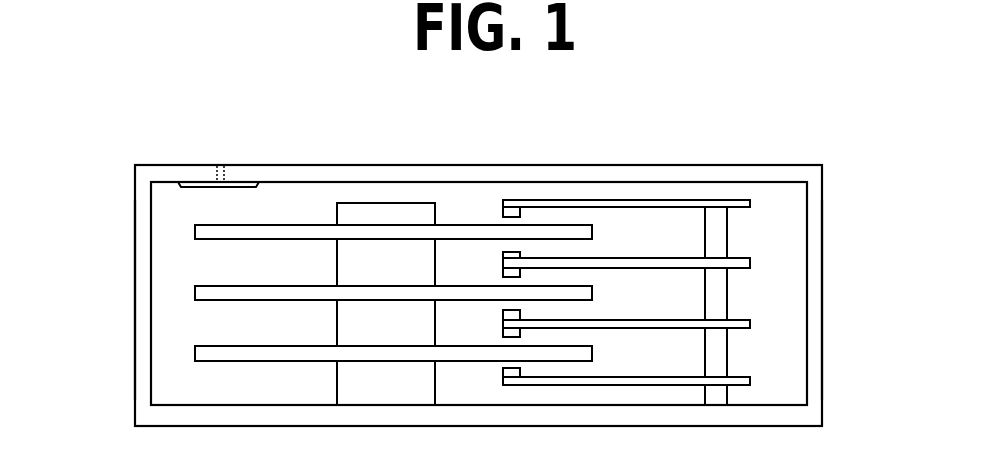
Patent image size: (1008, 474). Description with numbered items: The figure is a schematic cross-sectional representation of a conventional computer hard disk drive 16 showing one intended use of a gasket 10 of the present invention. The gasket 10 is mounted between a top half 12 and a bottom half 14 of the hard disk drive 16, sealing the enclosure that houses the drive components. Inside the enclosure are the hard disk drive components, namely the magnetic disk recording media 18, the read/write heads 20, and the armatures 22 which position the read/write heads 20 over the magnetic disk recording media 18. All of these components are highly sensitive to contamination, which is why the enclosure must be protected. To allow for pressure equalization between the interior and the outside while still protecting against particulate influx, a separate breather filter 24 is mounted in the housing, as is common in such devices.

The gasket 10 is at (151, 293).
The top half 12 is at (812, 194).
The bottom half 14 is at (812, 400).
The hard disk drive 16 is at (800, 142).
The magnetic disk recording media 18 is at (230, 237).
The read/write heads 20 is at (503, 257).
The armatures 22 is at (624, 258).
The breather filter 24 is at (248, 182).